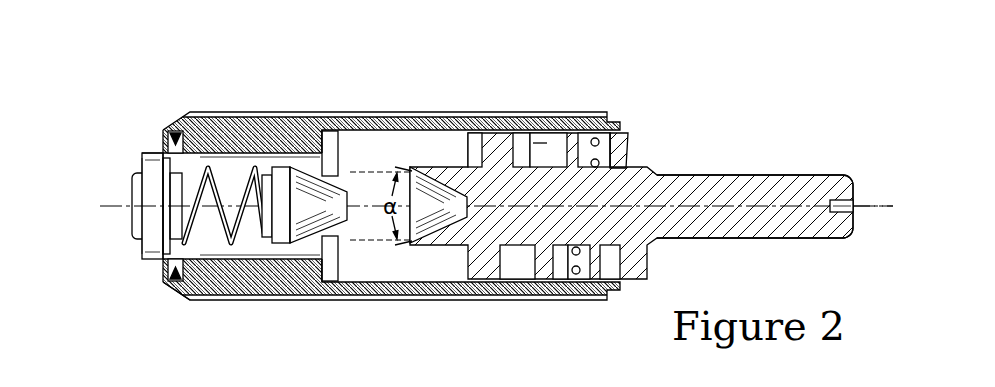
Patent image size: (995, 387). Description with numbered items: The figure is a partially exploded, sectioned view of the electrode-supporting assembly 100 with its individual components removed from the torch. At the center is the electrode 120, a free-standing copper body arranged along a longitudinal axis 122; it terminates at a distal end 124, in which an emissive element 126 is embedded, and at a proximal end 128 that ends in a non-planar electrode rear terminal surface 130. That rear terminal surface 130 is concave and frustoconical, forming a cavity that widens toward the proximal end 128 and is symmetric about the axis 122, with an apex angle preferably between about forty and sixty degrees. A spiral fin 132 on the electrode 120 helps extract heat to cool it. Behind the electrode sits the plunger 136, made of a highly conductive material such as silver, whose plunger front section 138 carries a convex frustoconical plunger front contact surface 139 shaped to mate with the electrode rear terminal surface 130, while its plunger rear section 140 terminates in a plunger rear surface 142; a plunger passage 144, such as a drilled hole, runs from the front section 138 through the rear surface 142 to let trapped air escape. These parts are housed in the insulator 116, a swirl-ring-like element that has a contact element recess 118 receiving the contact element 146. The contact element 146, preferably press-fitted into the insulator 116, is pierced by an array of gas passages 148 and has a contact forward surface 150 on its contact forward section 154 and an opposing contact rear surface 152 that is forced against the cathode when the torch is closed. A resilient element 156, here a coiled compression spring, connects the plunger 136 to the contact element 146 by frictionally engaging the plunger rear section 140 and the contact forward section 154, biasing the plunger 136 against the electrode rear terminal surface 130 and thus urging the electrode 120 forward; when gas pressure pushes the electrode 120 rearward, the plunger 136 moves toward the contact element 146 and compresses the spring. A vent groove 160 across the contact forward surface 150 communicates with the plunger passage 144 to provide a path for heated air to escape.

The electrode-supporting assembly 100 is at (673, 95).
The insulator 116 is at (532, 110).
The contact element recess 118 is at (207, 157).
The electrode 120 is at (728, 172).
The longitudinal axis 122 is at (863, 206).
The distal end 124 is at (835, 175).
The emissive element 126 is at (845, 207).
The proximal end 128 is at (415, 246).
The electrode rear terminal surface 130 is at (423, 190).
The spiral fin 132 is at (619, 147).
The plunger 136 is at (322, 170).
The plunger front section 138 is at (332, 236).
The plunger front contact surface 139 is at (309, 215).
The plunger rear section 140 is at (267, 170).
The plunger rear surface 142 is at (268, 193).
The plunger passage 144 is at (343, 218).
The contact element 146 is at (148, 148).
The gas passages 148 is at (149, 157).
The contact forward surface 150 is at (185, 292).
The contact rear surface 152 is at (130, 192).
The contact forward section 154 is at (176, 130).
The resilient element 156 is at (252, 170).
The vent groove 160 is at (207, 162).